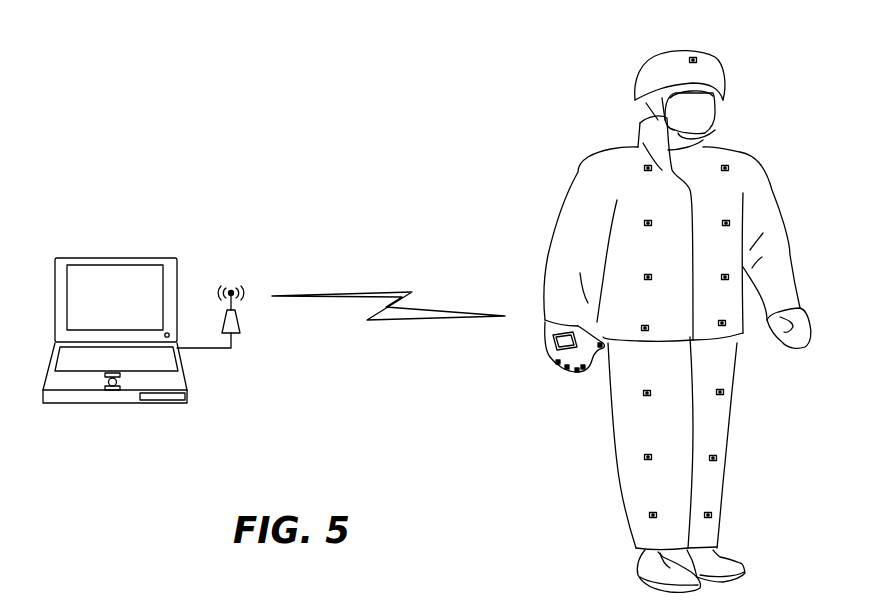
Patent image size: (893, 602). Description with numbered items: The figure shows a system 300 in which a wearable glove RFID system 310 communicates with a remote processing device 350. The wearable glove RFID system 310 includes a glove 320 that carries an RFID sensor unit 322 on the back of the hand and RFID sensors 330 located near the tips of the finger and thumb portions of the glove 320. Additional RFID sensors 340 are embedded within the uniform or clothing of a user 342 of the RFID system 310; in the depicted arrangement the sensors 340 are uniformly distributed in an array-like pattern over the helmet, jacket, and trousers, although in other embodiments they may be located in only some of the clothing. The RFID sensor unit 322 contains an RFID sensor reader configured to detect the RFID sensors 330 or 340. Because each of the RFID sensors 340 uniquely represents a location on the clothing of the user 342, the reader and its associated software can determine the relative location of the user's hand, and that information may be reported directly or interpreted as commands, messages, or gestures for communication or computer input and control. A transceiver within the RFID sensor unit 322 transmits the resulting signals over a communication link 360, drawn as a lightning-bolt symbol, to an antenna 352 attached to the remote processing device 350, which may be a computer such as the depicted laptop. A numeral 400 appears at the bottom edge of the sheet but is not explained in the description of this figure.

The system 300 is at (277, 108).
The wearable glove RFID system 310 is at (542, 383).
The glove 320 is at (548, 357).
The RFID sensor unit 322 is at (555, 332).
The RFID sensors 330 is at (597, 370).
The RFID sensors 340 is at (693, 56).
The user 342 is at (727, 352).
The remote processing device 350 is at (157, 257).
The antenna 352 is at (223, 310).
The communication link 360 is at (375, 293).
The system 400 is at (108, 591).